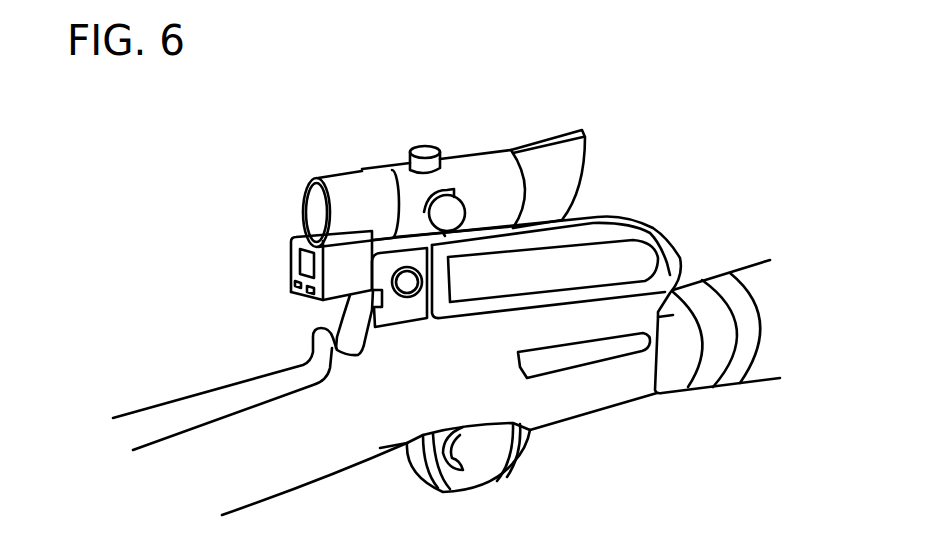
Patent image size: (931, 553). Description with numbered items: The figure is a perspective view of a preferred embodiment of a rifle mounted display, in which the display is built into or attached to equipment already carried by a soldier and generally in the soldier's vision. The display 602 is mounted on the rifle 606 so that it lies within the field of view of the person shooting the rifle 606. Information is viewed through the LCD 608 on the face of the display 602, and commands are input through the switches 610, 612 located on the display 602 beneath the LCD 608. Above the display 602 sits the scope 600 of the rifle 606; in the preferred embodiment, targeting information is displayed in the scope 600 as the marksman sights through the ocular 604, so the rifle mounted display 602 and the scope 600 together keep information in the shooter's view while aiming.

The scope 600 is at (382, 149).
The display 602 is at (257, 289).
The ocular 604 is at (315, 200).
The rifle 606 is at (658, 227).
The LCD 608 is at (307, 265).
The switch 610 is at (295, 288).
The switch 612 is at (308, 295).